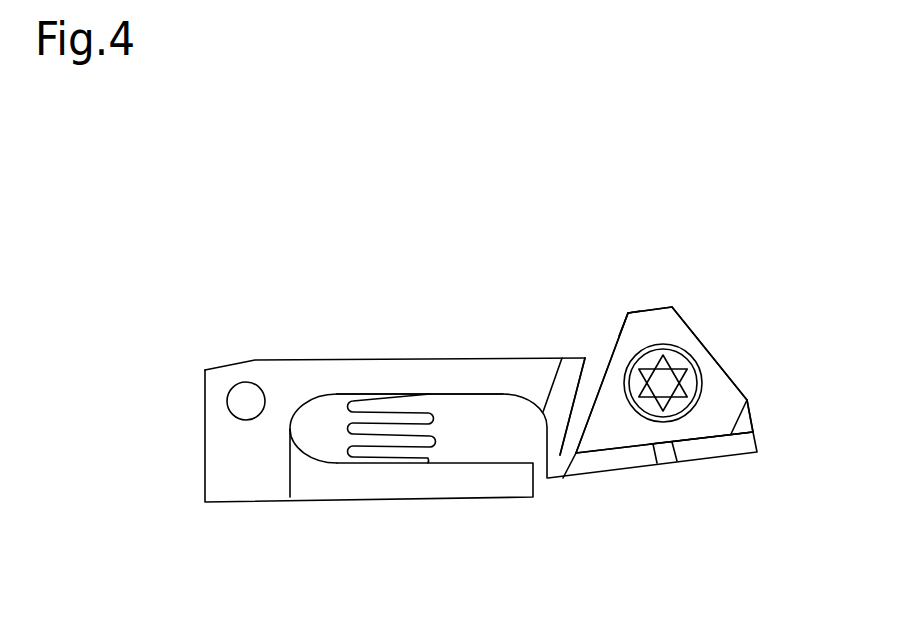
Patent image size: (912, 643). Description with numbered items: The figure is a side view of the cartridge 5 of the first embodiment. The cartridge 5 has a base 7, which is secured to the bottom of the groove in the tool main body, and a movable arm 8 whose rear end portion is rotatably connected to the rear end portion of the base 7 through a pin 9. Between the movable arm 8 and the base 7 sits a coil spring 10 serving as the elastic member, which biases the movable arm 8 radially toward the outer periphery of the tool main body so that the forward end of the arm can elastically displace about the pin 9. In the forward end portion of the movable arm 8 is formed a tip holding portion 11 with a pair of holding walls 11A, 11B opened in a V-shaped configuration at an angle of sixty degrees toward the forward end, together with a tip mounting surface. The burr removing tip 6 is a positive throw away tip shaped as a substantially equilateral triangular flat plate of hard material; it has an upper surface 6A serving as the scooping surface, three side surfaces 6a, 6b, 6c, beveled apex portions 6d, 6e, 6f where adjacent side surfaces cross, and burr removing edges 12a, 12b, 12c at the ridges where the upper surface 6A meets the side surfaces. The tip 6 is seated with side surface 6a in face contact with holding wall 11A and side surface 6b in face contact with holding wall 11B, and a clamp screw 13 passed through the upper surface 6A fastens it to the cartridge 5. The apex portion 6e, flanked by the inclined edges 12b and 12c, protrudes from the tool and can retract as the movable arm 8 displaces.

The cartridge 5 is at (228, 330).
The burr removing tip 6 is at (690, 307).
The upper surface 6A is at (648, 330).
The side surface 6a is at (650, 460).
The side surface 6b is at (592, 359).
The side surface 6c is at (748, 381).
The apex portion 6d is at (588, 448).
The apex portion 6e is at (623, 292).
The apex portion 6f is at (752, 432).
The base 7 is at (443, 482).
The movable arm 8 is at (427, 373).
The pin 9 is at (243, 400).
The spring 10 is at (350, 438).
The tip holding portion 11 is at (672, 484).
The holding wall 11A is at (708, 422).
The holding wall 11B is at (610, 424).
The burr removing edge 12a is at (673, 464).
The burr removing edge 12b is at (619, 336).
The burr removing edge 12c is at (693, 328).
The clamp screw 13 is at (691, 356).